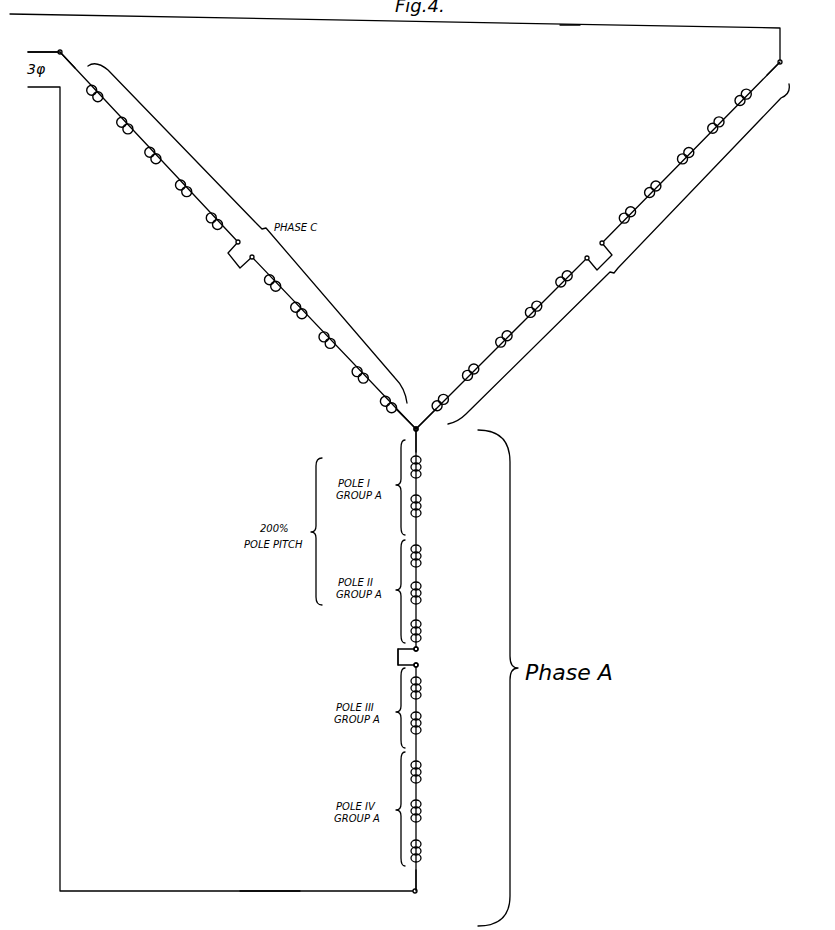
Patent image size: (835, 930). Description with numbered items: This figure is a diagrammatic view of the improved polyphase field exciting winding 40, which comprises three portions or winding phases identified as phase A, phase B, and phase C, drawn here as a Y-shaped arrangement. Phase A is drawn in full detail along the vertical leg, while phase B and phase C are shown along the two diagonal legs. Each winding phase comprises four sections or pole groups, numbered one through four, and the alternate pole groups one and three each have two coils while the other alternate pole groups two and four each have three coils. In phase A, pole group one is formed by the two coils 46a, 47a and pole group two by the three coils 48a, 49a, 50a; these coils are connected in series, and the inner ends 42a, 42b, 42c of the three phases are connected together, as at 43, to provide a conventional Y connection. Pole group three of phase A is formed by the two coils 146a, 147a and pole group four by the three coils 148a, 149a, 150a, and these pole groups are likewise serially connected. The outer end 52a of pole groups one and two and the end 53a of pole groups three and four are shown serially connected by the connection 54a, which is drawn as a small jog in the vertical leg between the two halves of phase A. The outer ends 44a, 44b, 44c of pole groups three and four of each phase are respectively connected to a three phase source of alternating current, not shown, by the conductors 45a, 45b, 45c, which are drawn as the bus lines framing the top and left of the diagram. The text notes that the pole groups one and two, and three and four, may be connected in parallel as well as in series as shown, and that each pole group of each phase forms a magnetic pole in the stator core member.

The polyphase field exciting winding 40 is at (580, 327).
The inner end of phase A 42a is at (422, 441).
The inner end of phase B 42b is at (414, 423).
The inner end of phase C 42c is at (412, 428).
The Y connection 43 is at (414, 432).
The outer end of phase A 44a is at (417, 880).
The outer end of phase B 44b is at (770, 80).
The outer end of phase C 44c is at (70, 62).
The conductor for phase A 45a is at (272, 891).
The conductor for phase B 45b is at (571, 28).
The conductor for phase C 45c is at (50, 47).
The coil of pole group I 46a is at (445, 467).
The coil of pole group I 47a is at (445, 506).
The coil of pole group II 48a is at (445, 556).
The coil of pole group II 49a is at (445, 593).
The coil of pole group II 50a is at (445, 631).
The outer end of pole groups I and II 52a is at (413, 649).
The end of pole groups III and IV 53a is at (411, 666).
The connection 54a is at (398, 657).
The coil of pole group III 146a is at (449, 688).
The coil of pole group III 147a is at (449, 723).
The coil of pole group IV 148a is at (449, 772).
The coil of pole group IV 149a is at (449, 811).
The coil of pole group IV 150a is at (449, 851).